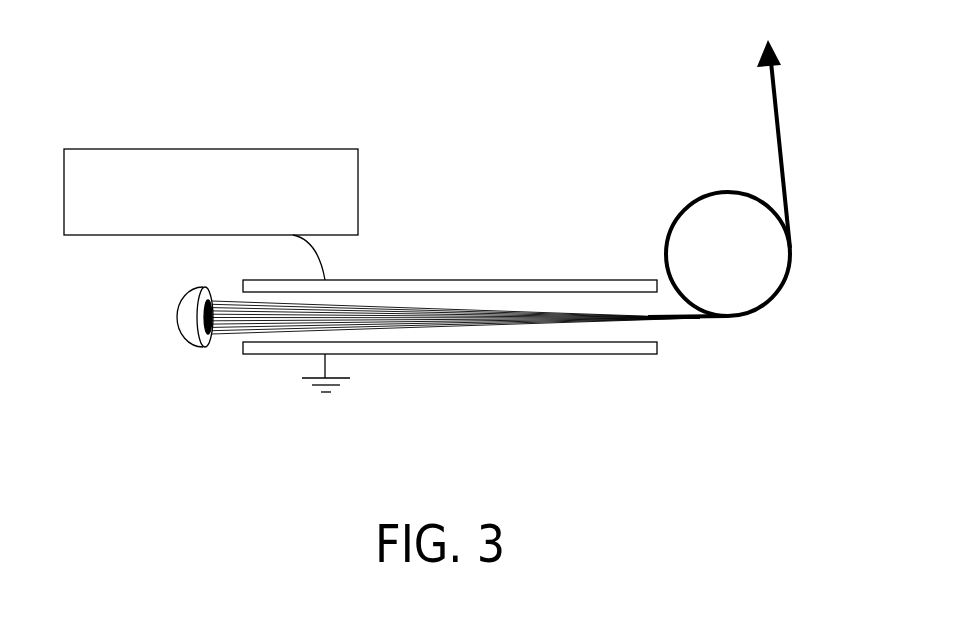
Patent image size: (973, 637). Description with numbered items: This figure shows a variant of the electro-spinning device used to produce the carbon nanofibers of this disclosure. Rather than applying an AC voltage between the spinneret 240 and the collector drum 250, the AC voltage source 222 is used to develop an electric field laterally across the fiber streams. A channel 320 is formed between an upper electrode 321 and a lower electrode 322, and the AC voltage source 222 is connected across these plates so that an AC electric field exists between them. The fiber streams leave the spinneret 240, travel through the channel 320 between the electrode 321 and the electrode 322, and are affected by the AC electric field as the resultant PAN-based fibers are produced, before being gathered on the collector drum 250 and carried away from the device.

The AC voltage source 222 is at (192, 222).
The electrode 321 is at (505, 279).
The electrode 322 is at (480, 354).
The spinneret 240 is at (175, 327).
The channel 320 is at (668, 332).
The collector drum 250 is at (712, 269).